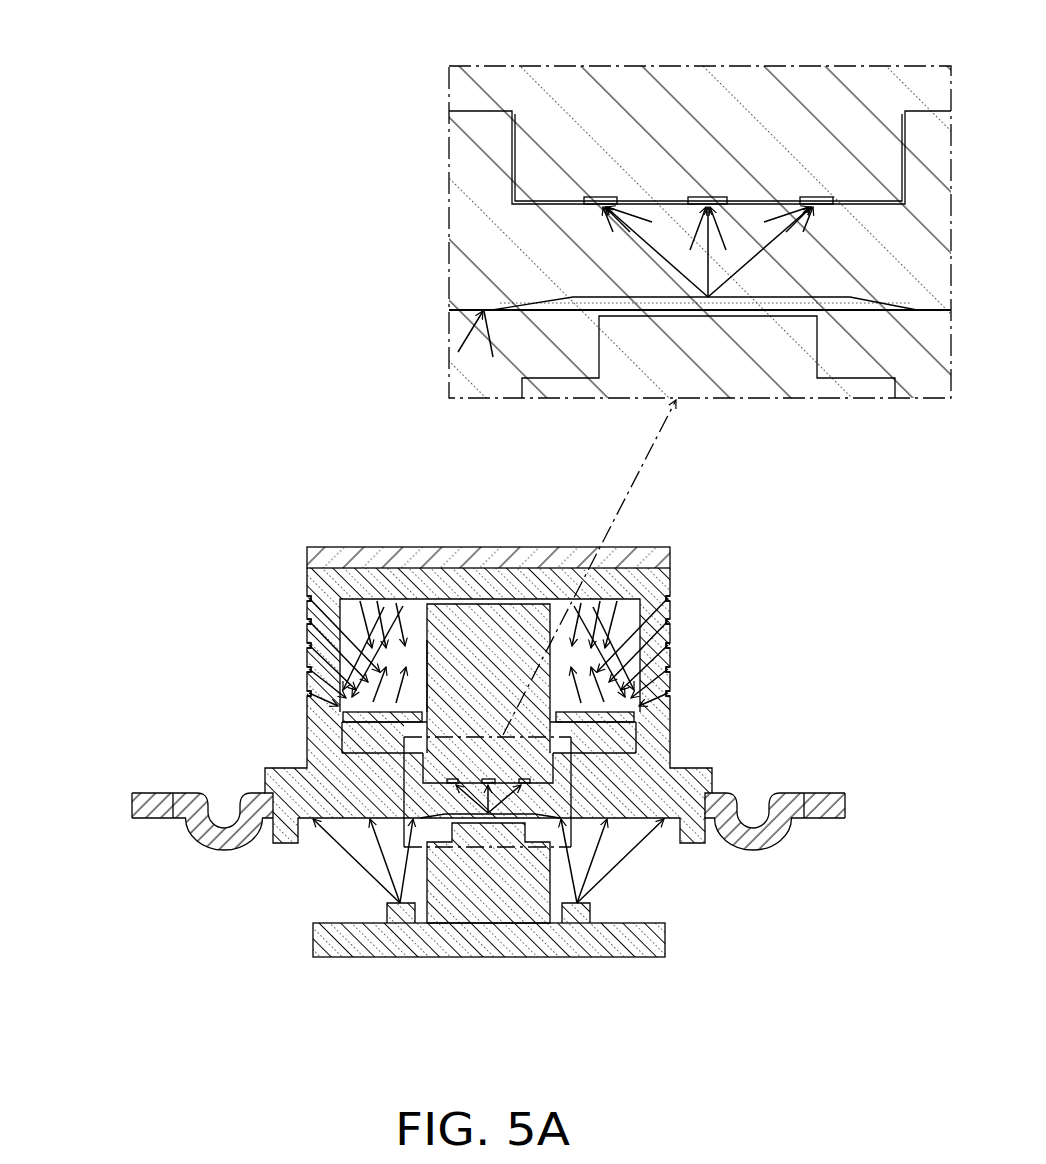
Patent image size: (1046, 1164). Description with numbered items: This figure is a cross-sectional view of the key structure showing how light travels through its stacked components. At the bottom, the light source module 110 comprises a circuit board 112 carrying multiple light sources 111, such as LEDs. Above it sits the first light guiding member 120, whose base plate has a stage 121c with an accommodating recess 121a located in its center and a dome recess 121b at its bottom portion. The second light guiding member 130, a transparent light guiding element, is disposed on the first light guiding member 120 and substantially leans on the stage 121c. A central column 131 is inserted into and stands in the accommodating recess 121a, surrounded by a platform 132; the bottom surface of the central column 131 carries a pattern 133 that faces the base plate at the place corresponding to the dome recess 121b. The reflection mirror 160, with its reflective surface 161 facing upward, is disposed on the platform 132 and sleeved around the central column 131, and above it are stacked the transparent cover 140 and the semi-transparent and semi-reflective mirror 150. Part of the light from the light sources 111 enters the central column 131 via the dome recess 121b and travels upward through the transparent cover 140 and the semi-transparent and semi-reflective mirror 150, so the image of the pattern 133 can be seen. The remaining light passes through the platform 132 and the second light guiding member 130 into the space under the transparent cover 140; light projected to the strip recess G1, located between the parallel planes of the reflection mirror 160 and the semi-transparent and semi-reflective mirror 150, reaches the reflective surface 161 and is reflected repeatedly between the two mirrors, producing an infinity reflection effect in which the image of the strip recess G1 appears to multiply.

The light source module 110 is at (395, 921).
The light source 111 is at (570, 908).
The circuit board 112 is at (645, 938).
The first light guiding member 120 is at (815, 793).
The accommodating recess 121a is at (516, 156).
The dome recess 121b is at (656, 310).
The stage 121c is at (470, 193).
The second light guiding member 130 is at (354, 662).
The central column 131 is at (482, 632).
The platform 132 is at (363, 732).
The pattern 133 is at (820, 196).
The transparent cover 140 is at (672, 613).
The semi-transparent and semi-reflective mirror 150 is at (665, 560).
The reflection mirror 160 is at (634, 718).
The reflective surface 161 is at (416, 707).
The strip recess G1 is at (668, 672).